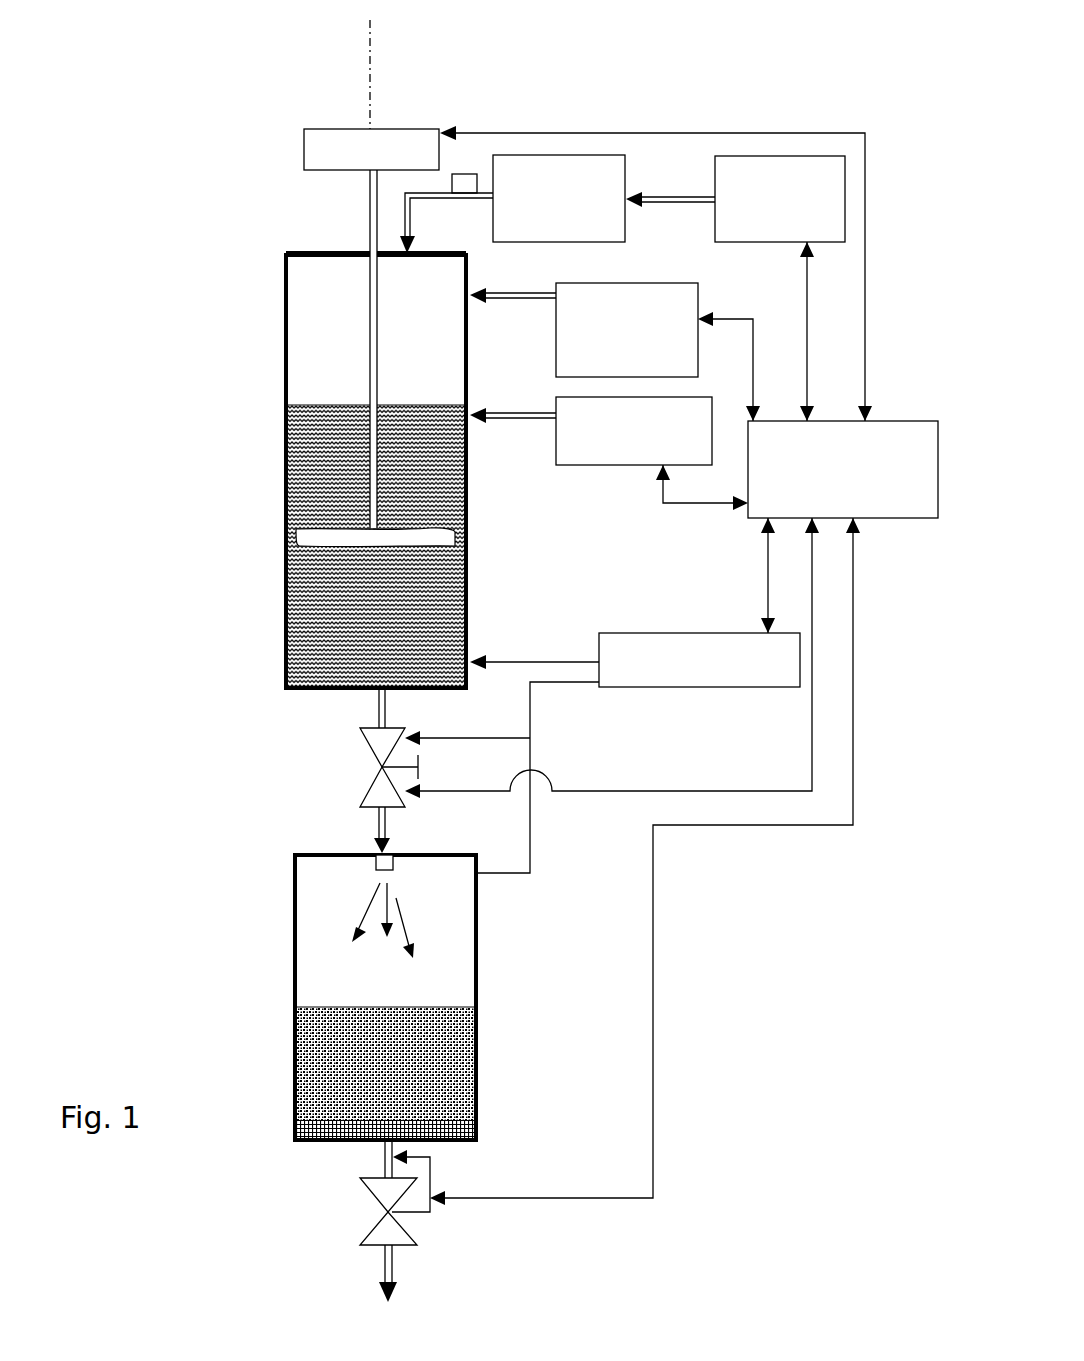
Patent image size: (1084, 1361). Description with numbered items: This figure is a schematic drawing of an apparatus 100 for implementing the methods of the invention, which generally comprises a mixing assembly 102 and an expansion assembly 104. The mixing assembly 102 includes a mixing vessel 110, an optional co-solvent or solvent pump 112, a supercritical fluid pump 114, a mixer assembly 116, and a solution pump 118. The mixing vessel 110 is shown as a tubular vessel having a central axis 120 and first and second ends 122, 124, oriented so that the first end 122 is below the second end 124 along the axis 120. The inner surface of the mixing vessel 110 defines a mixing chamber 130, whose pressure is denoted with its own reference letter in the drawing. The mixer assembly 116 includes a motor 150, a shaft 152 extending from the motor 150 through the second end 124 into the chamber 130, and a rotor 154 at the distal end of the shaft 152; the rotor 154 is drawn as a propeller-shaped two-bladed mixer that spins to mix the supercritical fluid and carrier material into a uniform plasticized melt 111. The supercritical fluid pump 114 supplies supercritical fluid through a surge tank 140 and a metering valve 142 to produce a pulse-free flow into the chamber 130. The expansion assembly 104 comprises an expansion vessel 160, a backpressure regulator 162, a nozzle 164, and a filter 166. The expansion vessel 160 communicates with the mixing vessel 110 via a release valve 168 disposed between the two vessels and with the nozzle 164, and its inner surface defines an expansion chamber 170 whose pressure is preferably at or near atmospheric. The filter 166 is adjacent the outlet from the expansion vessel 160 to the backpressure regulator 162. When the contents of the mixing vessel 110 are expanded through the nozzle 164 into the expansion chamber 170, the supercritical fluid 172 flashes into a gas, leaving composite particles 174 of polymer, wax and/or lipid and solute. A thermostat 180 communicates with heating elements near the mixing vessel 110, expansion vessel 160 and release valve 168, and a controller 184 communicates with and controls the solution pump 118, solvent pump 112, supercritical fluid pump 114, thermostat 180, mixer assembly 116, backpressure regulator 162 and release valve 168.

The apparatus 100 is at (138, 103).
The mixing assembly 102 is at (275, 262).
The expansion assembly 104 is at (280, 886).
The mixing vessel 110 is at (286, 443).
The melt 111 is at (298, 655).
The solvent pump 112 is at (556, 323).
The supercritical fluid pump 114 is at (784, 156).
The mixer assembly 116 is at (430, 118).
The solution pump 118 is at (560, 452).
The central axis 120 is at (370, 50).
The first end 122 is at (305, 690).
The second end 124 is at (325, 253).
The mixing chamber 130 is at (425, 352).
The surge tank 140 is at (600, 155).
The metering valve 142 is at (468, 174).
The motor 150 is at (340, 129).
The shaft 152 is at (370, 281).
The rotor 154 is at (300, 540).
The expansion vessel 160 is at (293, 930).
The backpressure regulator 162 is at (404, 1246).
The nozzle 164 is at (376, 863).
The filter 166 is at (478, 1098).
The release valve 168 is at (378, 728).
The expansion chamber 170 is at (372, 986).
The supercritical fluid 172 is at (372, 918).
The composite particles 174 is at (297, 1088).
The thermostat 180 is at (698, 687).
The controller 184 is at (905, 518).